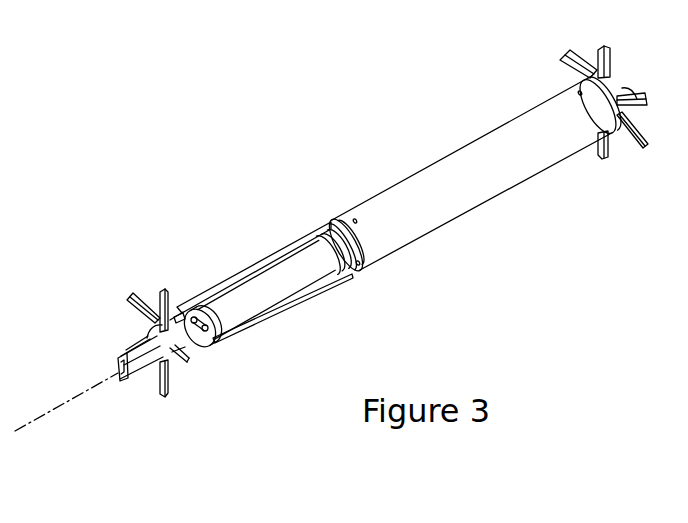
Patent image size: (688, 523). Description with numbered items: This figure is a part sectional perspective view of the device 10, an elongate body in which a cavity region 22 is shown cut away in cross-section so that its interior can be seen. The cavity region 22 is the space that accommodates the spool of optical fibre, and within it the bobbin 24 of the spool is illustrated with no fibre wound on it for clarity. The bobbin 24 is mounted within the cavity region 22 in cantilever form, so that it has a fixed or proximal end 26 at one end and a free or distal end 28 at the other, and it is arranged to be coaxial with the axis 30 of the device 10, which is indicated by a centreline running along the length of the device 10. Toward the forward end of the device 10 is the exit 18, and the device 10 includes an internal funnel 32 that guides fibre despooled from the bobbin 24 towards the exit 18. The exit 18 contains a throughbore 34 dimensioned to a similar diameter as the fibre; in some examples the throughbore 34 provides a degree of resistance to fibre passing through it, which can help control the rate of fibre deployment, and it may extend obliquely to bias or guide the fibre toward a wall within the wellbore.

The device 10 is at (444, 175).
The exit 18 is at (132, 341).
The cavity region 22 is at (265, 262).
The bobbin 24 is at (280, 297).
The proximal end 26 is at (367, 252).
The distal end 28 is at (205, 342).
The axis 30 is at (58, 403).
The internal funnel 32 is at (175, 352).
The throughbore 34 is at (138, 378).